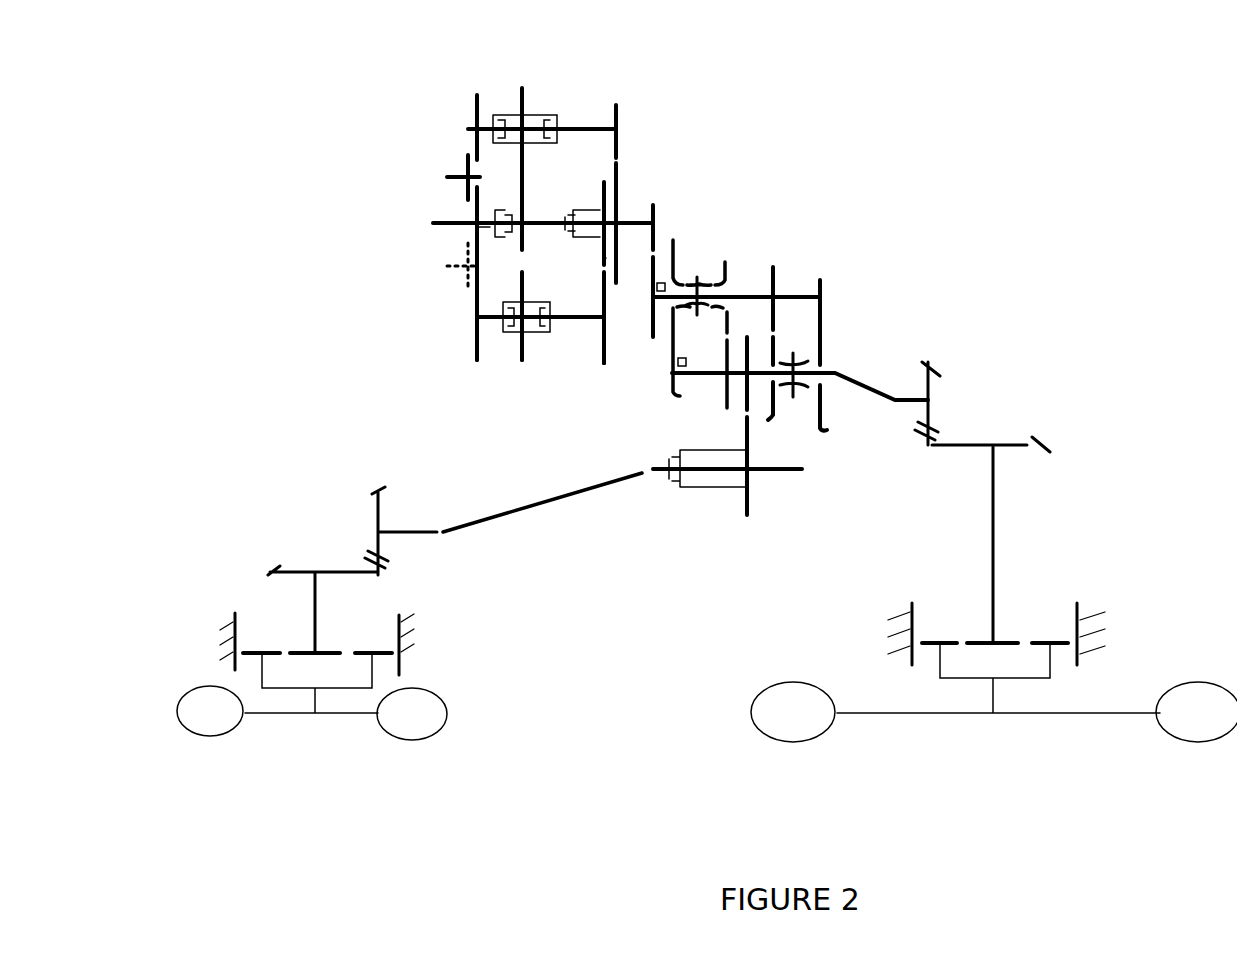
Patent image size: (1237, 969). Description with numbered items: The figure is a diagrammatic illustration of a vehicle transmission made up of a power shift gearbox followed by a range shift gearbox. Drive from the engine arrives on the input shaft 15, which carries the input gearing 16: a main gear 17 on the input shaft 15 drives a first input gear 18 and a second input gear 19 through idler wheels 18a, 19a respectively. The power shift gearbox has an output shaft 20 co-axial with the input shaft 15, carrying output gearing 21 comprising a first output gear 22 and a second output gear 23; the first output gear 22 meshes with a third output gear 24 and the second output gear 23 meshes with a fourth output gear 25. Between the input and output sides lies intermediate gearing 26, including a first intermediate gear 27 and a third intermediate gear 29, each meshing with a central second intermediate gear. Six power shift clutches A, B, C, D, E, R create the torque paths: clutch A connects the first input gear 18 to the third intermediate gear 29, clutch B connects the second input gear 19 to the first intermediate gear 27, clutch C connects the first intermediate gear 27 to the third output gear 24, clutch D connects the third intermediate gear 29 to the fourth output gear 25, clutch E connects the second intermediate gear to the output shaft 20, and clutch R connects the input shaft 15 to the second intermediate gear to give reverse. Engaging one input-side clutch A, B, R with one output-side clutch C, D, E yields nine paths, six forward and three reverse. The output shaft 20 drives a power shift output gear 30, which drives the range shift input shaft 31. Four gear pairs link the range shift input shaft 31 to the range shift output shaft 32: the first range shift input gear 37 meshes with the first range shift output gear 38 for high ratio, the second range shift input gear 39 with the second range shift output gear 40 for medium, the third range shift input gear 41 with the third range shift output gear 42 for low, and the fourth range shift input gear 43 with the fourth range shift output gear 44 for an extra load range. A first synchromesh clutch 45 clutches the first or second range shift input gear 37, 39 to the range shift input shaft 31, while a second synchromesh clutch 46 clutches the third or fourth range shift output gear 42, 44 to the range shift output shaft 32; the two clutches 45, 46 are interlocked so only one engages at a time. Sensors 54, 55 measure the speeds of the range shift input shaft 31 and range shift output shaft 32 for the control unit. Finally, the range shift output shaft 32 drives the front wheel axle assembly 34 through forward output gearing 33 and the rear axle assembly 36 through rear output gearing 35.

The input shaft 15 is at (440, 218).
The input gearing 16 is at (481, 402).
The main gear 17 is at (477, 227).
The first input gear 18 is at (475, 350).
The idler wheel 18a is at (468, 285).
The second input gear 19 is at (476, 105).
The idler wheel 19a is at (468, 160).
The output shaft 20 is at (630, 222).
The output gearing 21 is at (617, 386).
The first output gear 22 is at (608, 183).
The second output gear 23 is at (600, 258).
The third output gear 24 is at (618, 112).
The fourth output gear 25 is at (634, 343).
The intermediate gearing 26 is at (524, 383).
The first intermediate gear 27 is at (522, 90).
The third intermediate gear 29 is at (522, 200).
The power shift output gear 30 is at (656, 210).
The range shift input shaft 31 is at (796, 292).
The range shift output shaft 32 is at (825, 370).
The forward output gearing 33 is at (705, 490).
The front wheel axle assembly 34 is at (446, 664).
The rear output gearing 35 is at (945, 417).
The rear axle assembly 36 is at (1042, 622).
The first range shift input gear 37 is at (678, 250).
The first range shift output gear 38 is at (672, 385).
The second range shift input gear 39 is at (705, 280).
The second range shift output gear 40 is at (725, 405).
The third range shift input gear 41 is at (778, 268).
The third range shift output gear 42 is at (774, 415).
The fourth range shift input gear 43 is at (824, 282).
The fourth range shift output gear 44 is at (822, 420).
The first synchromesh clutch 45 is at (733, 262).
The second synchromesh clutch 46 is at (793, 390).
The sensor 54 is at (652, 297).
The sensor 55 is at (672, 356).
The power shift clutch A is at (517, 335).
The power shift clutch B is at (500, 115).
The power shift clutch C is at (550, 115).
The power shift clutch D is at (550, 320).
The power shift clutch E is at (578, 212).
The power shift clutch R is at (466, 240).